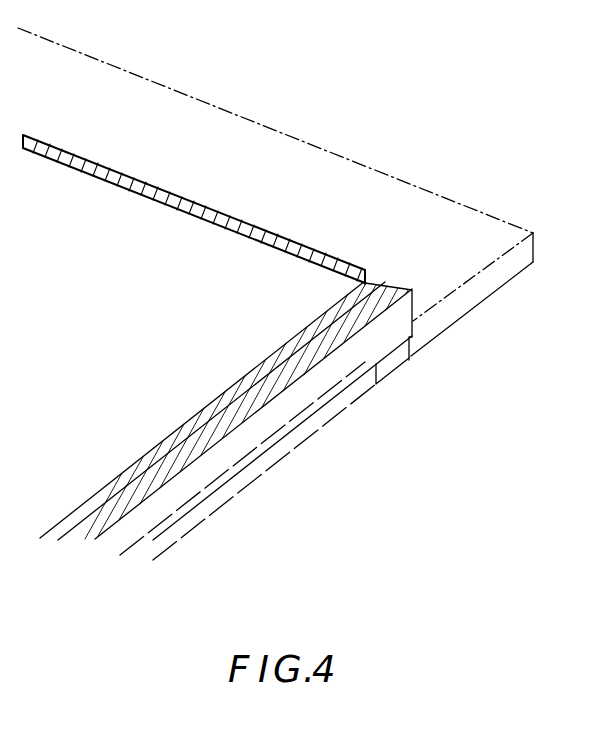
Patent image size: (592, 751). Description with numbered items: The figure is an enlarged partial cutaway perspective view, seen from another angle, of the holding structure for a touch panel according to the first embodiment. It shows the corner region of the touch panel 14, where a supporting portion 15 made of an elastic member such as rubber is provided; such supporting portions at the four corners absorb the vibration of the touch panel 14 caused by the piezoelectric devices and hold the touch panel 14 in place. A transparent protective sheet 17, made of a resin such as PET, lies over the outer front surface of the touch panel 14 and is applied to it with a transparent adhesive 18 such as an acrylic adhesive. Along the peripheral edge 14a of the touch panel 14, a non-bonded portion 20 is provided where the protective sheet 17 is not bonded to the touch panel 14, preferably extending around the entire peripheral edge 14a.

The touch panel 14 is at (400, 329).
The peripheral edge of the touch panel 14a is at (258, 410).
The supporting portion 15 is at (390, 363).
The protective sheet 17 is at (233, 114).
The transparent adhesive 18 is at (292, 293).
The non-bonded portion 20 is at (387, 295).